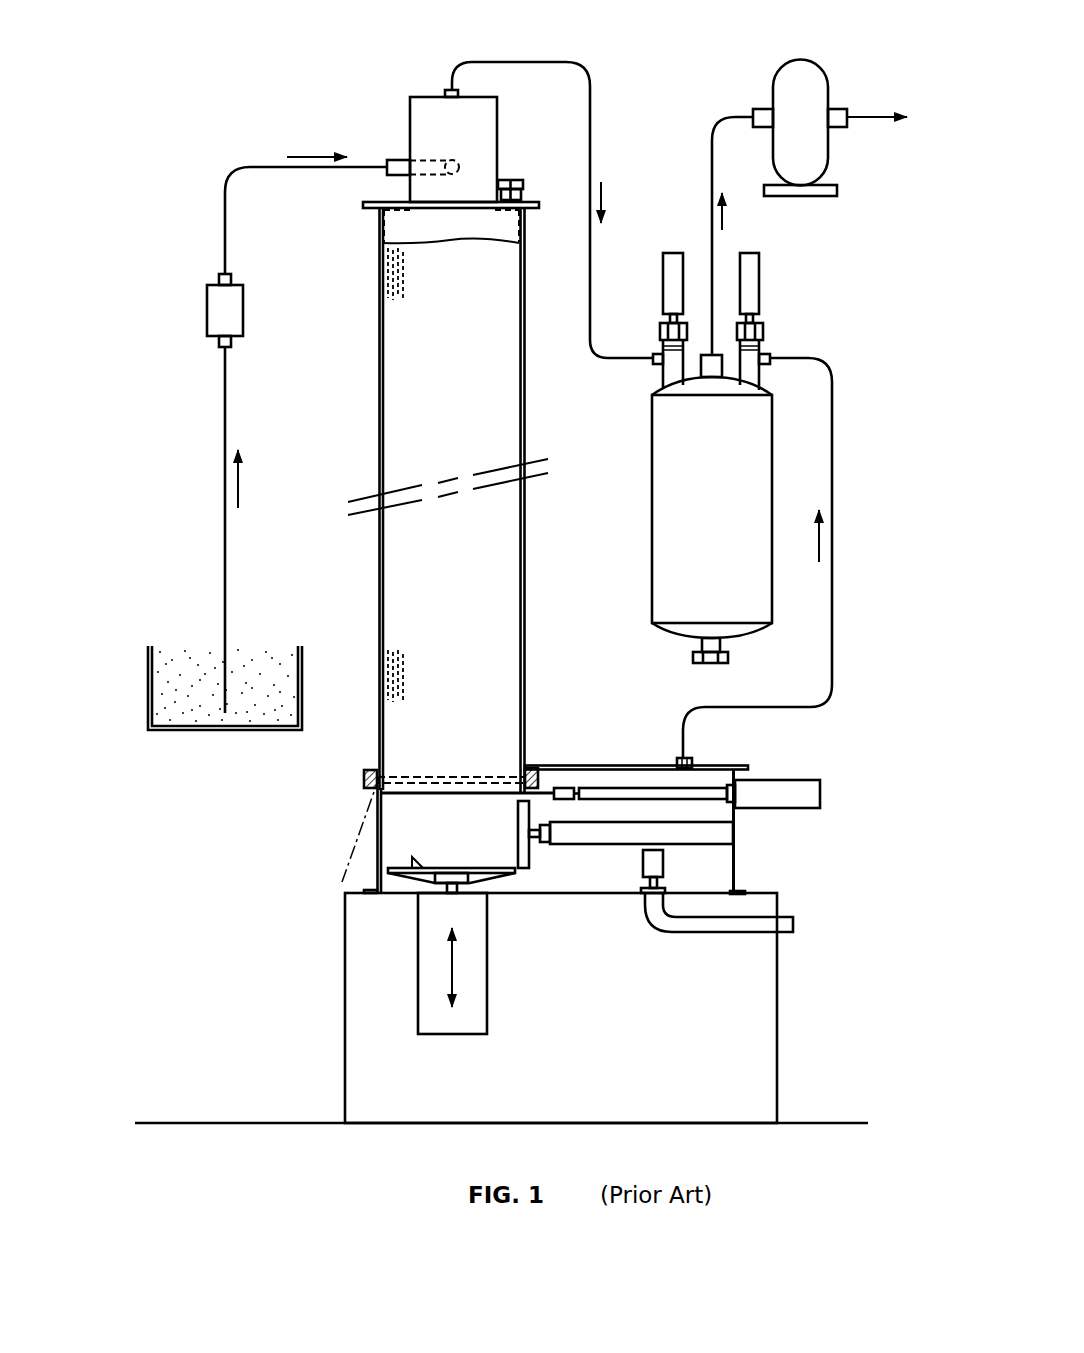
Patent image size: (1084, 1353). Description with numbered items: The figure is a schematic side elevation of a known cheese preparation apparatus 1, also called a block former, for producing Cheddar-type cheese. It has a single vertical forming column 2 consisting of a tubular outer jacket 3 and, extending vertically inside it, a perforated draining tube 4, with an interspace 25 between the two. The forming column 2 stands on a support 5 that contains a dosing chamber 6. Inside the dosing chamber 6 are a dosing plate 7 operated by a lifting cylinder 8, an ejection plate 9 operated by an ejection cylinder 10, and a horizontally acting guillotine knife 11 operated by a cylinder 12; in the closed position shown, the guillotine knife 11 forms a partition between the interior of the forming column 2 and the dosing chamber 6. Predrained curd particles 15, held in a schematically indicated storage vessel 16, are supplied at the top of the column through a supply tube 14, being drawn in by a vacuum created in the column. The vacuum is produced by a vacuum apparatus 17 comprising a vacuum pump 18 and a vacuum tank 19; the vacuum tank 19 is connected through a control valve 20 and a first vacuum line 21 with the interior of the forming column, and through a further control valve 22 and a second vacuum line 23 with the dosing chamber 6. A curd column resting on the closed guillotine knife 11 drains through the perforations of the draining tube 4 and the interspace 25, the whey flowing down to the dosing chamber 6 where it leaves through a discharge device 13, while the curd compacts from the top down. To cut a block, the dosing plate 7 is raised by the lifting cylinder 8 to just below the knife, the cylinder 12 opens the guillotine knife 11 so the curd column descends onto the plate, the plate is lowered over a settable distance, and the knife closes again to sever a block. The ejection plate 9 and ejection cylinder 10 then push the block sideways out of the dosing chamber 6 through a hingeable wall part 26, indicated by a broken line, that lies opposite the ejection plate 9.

The cheese preparation apparatus 1 is at (157, 212).
The vertical forming column 2 is at (372, 427).
The tubular outer jacket 3 is at (378, 398).
The perforated draining tube 4 is at (385, 361).
The support 5 is at (817, 908).
The dosing chamber 6 is at (455, 850).
The dosing plate 7 is at (412, 858).
The lifting cylinder 8 is at (487, 990).
The ejection plate 9 is at (523, 850).
The ejection cylinder 10 is at (572, 837).
The guillotine knife 11 is at (418, 795).
The cylinder 12 is at (797, 790).
The discharge device 13 is at (682, 933).
The supply tube 14 is at (397, 158).
The curd particles 15 is at (185, 677).
The storage vessel 16 is at (148, 668).
The vacuum apparatus 17 is at (853, 338).
The vacuum pump 18 is at (828, 73).
The vacuum tank 19 is at (664, 543).
The control valve 20 is at (660, 330).
The first vacuum line 21 is at (591, 119).
The control valve 22 is at (763, 330).
The second vacuum line 23 is at (833, 483).
The interspace 25 is at (382, 456).
The wall part 26 is at (358, 832).